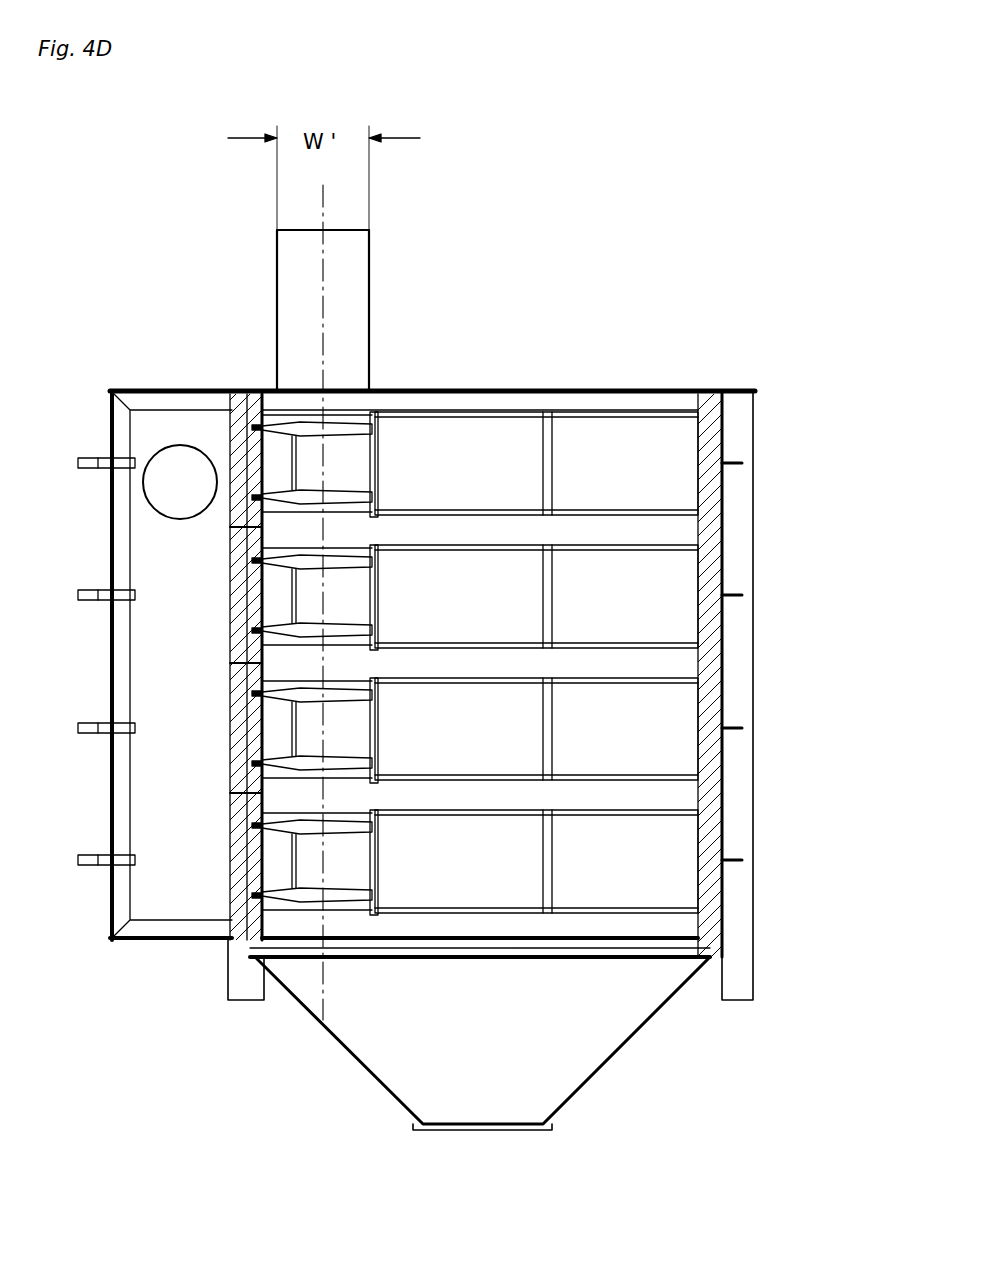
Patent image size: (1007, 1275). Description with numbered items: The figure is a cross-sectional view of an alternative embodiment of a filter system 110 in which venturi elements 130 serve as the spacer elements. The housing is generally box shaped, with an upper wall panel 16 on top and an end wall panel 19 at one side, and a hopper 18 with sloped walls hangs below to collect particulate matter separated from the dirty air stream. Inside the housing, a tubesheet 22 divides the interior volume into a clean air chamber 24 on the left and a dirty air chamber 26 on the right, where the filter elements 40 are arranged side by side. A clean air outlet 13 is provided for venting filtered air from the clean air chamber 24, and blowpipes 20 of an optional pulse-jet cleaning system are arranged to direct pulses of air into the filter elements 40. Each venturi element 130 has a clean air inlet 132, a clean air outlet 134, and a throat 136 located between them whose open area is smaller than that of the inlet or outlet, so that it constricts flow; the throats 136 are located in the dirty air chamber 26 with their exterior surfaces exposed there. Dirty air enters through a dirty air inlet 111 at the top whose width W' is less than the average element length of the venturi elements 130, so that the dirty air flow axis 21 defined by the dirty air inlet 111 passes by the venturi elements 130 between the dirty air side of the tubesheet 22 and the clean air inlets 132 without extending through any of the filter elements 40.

The filter system 110 is at (607, 195).
The dirty air inlet 111 is at (369, 266).
The dirty air flow axis 21 is at (327, 200).
The upper wall panel 16 is at (610, 390).
The tubesheet 22 is at (272, 400).
The end wall panel 19 is at (742, 785).
The hopper 18 is at (575, 1068).
The clean air outlet 13 is at (155, 457).
The blowpipes 20 is at (80, 458).
The clean air chamber 24 is at (192, 575).
The venturi elements 130 is at (340, 420).
The clean air inlet 132 is at (400, 410).
The clean air outlet 134 is at (262, 470).
The throat 136 is at (291, 425).
The filter elements 40 is at (660, 465).
The dirty air chamber 26 is at (630, 530).